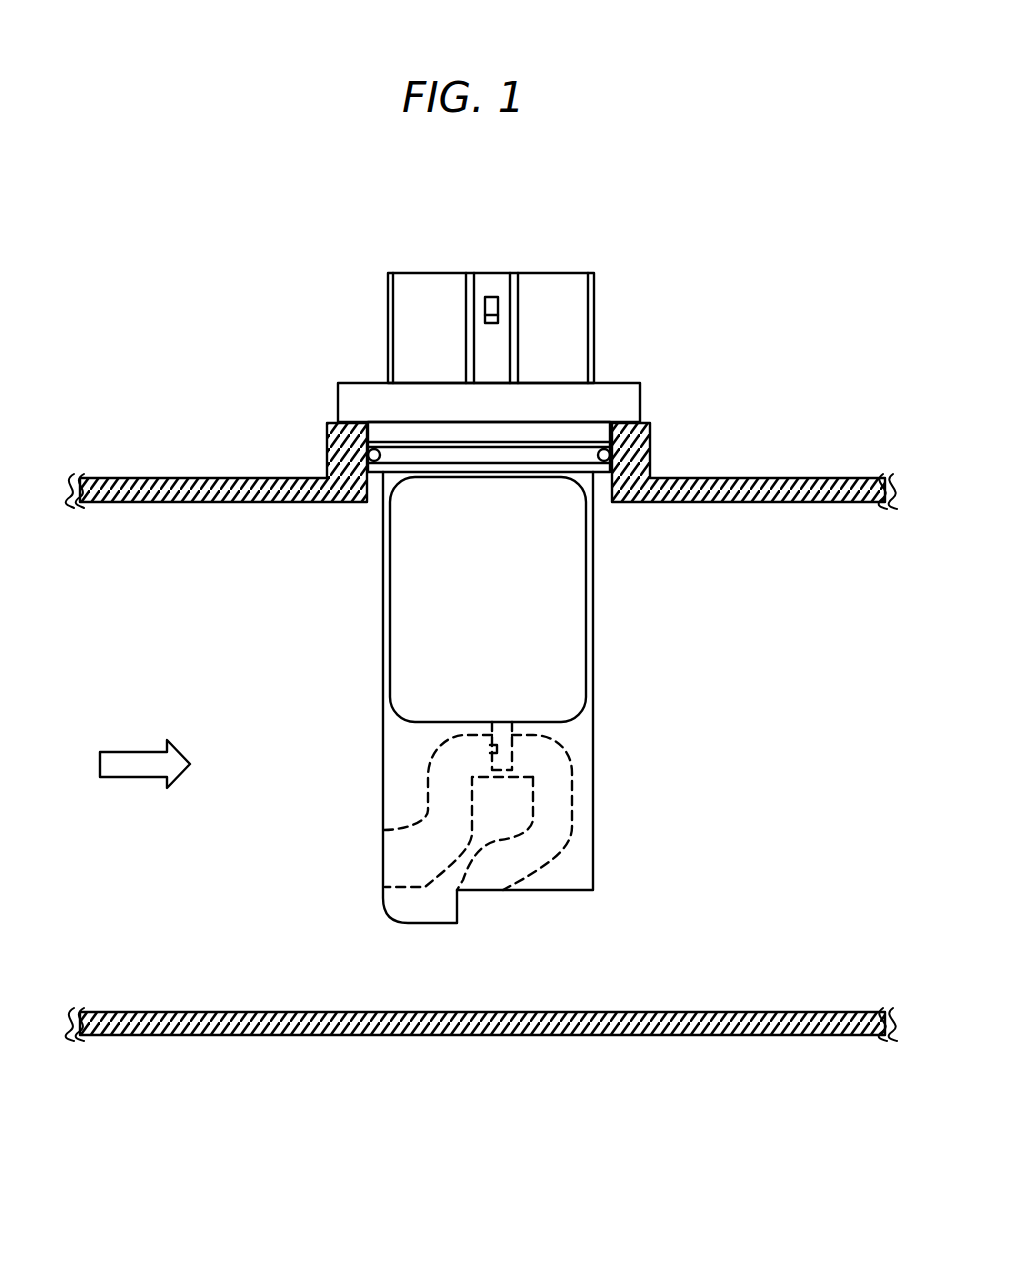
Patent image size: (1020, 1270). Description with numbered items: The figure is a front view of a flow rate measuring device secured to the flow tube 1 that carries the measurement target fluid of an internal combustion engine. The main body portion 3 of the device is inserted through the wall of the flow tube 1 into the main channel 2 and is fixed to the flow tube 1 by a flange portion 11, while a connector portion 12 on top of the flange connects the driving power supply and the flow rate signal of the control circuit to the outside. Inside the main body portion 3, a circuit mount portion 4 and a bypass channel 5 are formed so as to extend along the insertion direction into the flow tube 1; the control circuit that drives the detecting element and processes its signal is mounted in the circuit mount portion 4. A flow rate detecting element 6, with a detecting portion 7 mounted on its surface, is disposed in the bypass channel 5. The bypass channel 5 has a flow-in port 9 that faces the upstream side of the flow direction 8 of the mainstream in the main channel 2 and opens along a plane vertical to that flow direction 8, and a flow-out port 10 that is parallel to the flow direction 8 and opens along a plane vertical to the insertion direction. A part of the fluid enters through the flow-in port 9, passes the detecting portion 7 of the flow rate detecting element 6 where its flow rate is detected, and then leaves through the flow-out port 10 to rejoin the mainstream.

The flow tube 1 is at (787, 478).
The main channel 2 is at (188, 542).
The main body portion 3 is at (593, 627).
The circuit mount portion 4 is at (427, 623).
The bypass channel 5 is at (427, 815).
The flow rate detecting element 6 is at (487, 740).
The detecting portion 7 is at (493, 750).
The flow direction 8 is at (125, 752).
The flow-in port 9 is at (390, 863).
The flow-out port 10 is at (485, 883).
The flange portion 11 is at (632, 383).
The connector portion 12 is at (388, 322).